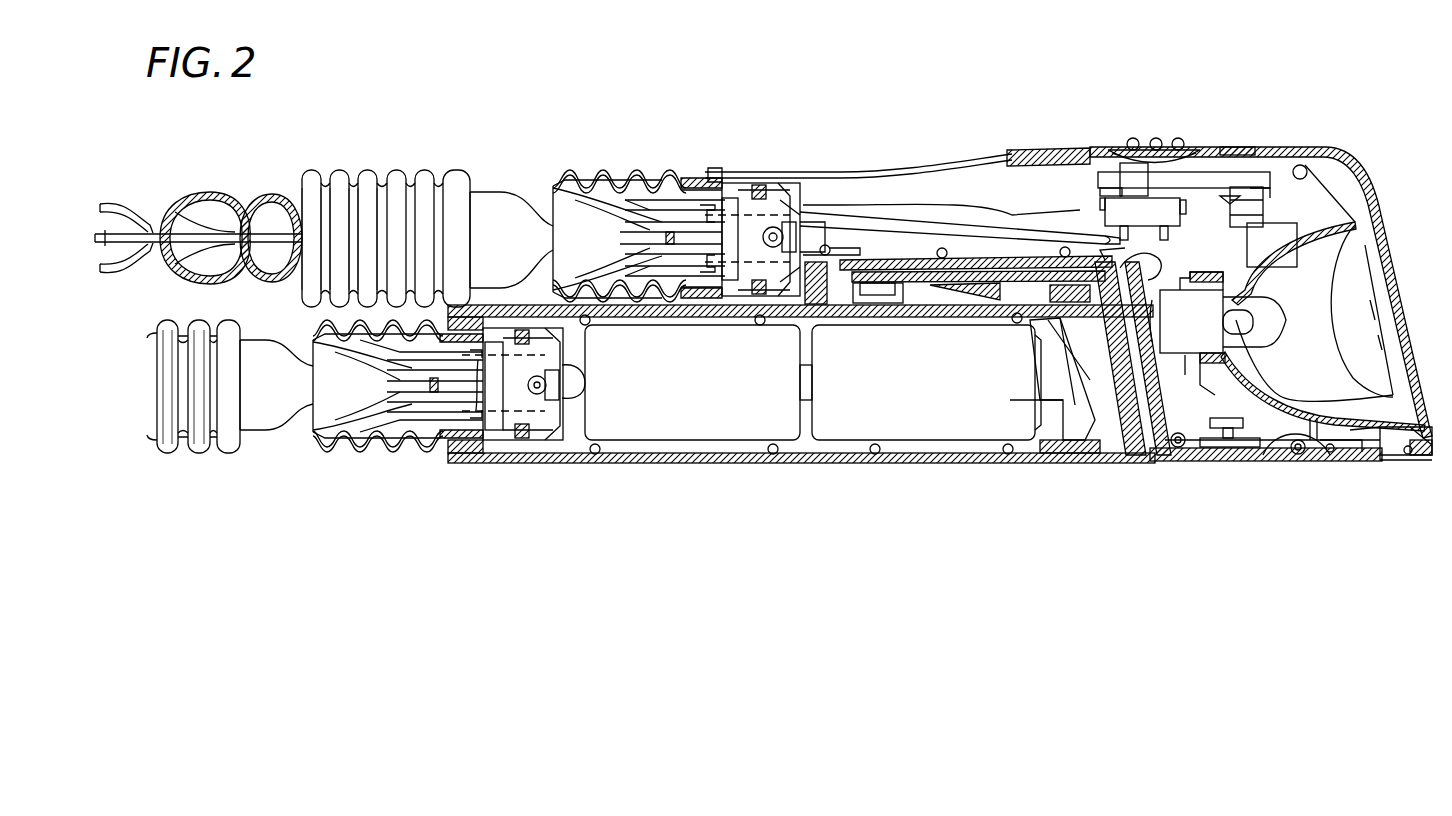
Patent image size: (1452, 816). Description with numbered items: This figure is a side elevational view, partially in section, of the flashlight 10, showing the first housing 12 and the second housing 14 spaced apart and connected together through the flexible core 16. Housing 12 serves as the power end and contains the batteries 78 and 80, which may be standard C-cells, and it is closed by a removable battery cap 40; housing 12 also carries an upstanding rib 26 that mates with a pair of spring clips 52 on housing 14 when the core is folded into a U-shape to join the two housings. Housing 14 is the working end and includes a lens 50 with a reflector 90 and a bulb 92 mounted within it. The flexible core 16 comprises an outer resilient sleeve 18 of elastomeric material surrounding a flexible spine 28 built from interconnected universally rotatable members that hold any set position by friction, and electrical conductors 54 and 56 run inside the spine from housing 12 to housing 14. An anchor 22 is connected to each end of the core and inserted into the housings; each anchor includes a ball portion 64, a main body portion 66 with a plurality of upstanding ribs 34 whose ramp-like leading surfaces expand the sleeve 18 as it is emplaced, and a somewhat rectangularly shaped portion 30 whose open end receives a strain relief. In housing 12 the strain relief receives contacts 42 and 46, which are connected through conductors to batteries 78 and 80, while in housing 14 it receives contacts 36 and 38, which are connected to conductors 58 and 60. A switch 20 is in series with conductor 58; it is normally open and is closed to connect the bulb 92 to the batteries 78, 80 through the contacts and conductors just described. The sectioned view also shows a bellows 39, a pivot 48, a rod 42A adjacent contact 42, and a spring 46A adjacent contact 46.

The flashlight 10 is at (1284, 136).
The first housing 12 is at (792, 463).
The second housing 14 is at (878, 172).
The flexible core 16 is at (352, 165).
The outer resilient sleeve 18 is at (406, 170).
The switch 20 is at (1140, 148).
The anchor 22 is at (688, 192).
The upstanding rib 26 is at (1049, 330).
The flexible spine 28 is at (207, 192).
The rectangularly shaped portion 30 is at (802, 202).
The upstanding ribs 34 is at (397, 450).
The contact 36 is at (838, 260).
The contact 38 is at (838, 215).
The bellows 39 is at (594, 178).
The removable battery cap 40 is at (1115, 455).
The contact 42 is at (482, 392).
The rod 42A is at (724, 192).
The contact 46 is at (470, 375).
The spring 46A is at (716, 312).
The pivot 48 is at (775, 225).
The lens 50 is at (1393, 290).
The spring clips 52 is at (880, 292).
The electrical conductor 54 is at (122, 230).
The electrical conductor 56 is at (138, 250).
The conductor 58 is at (908, 266).
The conductor 60 is at (940, 200).
The ball portion 64 is at (570, 212).
The main body portion 66 is at (658, 180).
The battery 78 is at (696, 420).
The battery 80 is at (930, 420).
The reflector 90 is at (1378, 400).
The bulb 92 is at (1270, 300).